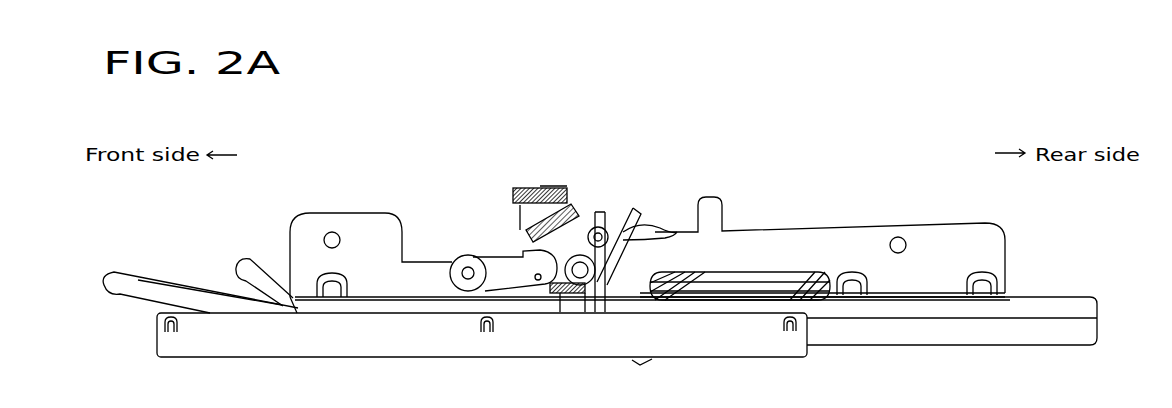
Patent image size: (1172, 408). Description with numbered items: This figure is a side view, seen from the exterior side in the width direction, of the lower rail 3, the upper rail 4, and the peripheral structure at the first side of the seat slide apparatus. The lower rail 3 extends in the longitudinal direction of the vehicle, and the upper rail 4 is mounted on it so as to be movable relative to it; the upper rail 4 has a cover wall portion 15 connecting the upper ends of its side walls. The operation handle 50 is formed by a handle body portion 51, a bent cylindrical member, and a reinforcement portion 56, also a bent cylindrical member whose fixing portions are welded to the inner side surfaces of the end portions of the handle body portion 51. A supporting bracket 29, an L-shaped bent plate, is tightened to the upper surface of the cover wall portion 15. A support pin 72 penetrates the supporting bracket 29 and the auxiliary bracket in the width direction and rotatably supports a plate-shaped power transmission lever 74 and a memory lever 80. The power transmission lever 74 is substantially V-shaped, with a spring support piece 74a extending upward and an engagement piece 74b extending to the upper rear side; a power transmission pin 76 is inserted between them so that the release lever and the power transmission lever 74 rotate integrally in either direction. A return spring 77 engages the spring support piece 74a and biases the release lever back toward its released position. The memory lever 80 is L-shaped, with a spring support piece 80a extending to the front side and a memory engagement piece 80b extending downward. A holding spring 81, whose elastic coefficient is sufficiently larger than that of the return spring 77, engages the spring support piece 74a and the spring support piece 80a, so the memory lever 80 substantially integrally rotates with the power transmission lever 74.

The lower rail 3 is at (773, 357).
The upper rail 4 is at (1062, 346).
The cover wall portion 15 is at (1033, 296).
The supporting bracket 29 is at (952, 229).
The operation handle 50 is at (139, 276).
The handle body portion 51 is at (187, 286).
The reinforcement portion 56 is at (262, 265).
The support pin 72 is at (608, 266).
The power transmission lever 74 is at (622, 217).
The spring support piece 74a is at (588, 196).
The engagement piece 74b is at (640, 222).
The power transmission pin 76 is at (590, 213).
The return spring 77 is at (553, 189).
The memory lever 80 is at (525, 260).
The spring support piece 80a is at (522, 231).
The memory engagement piece 80b is at (593, 298).
The holding spring 81 is at (516, 207).